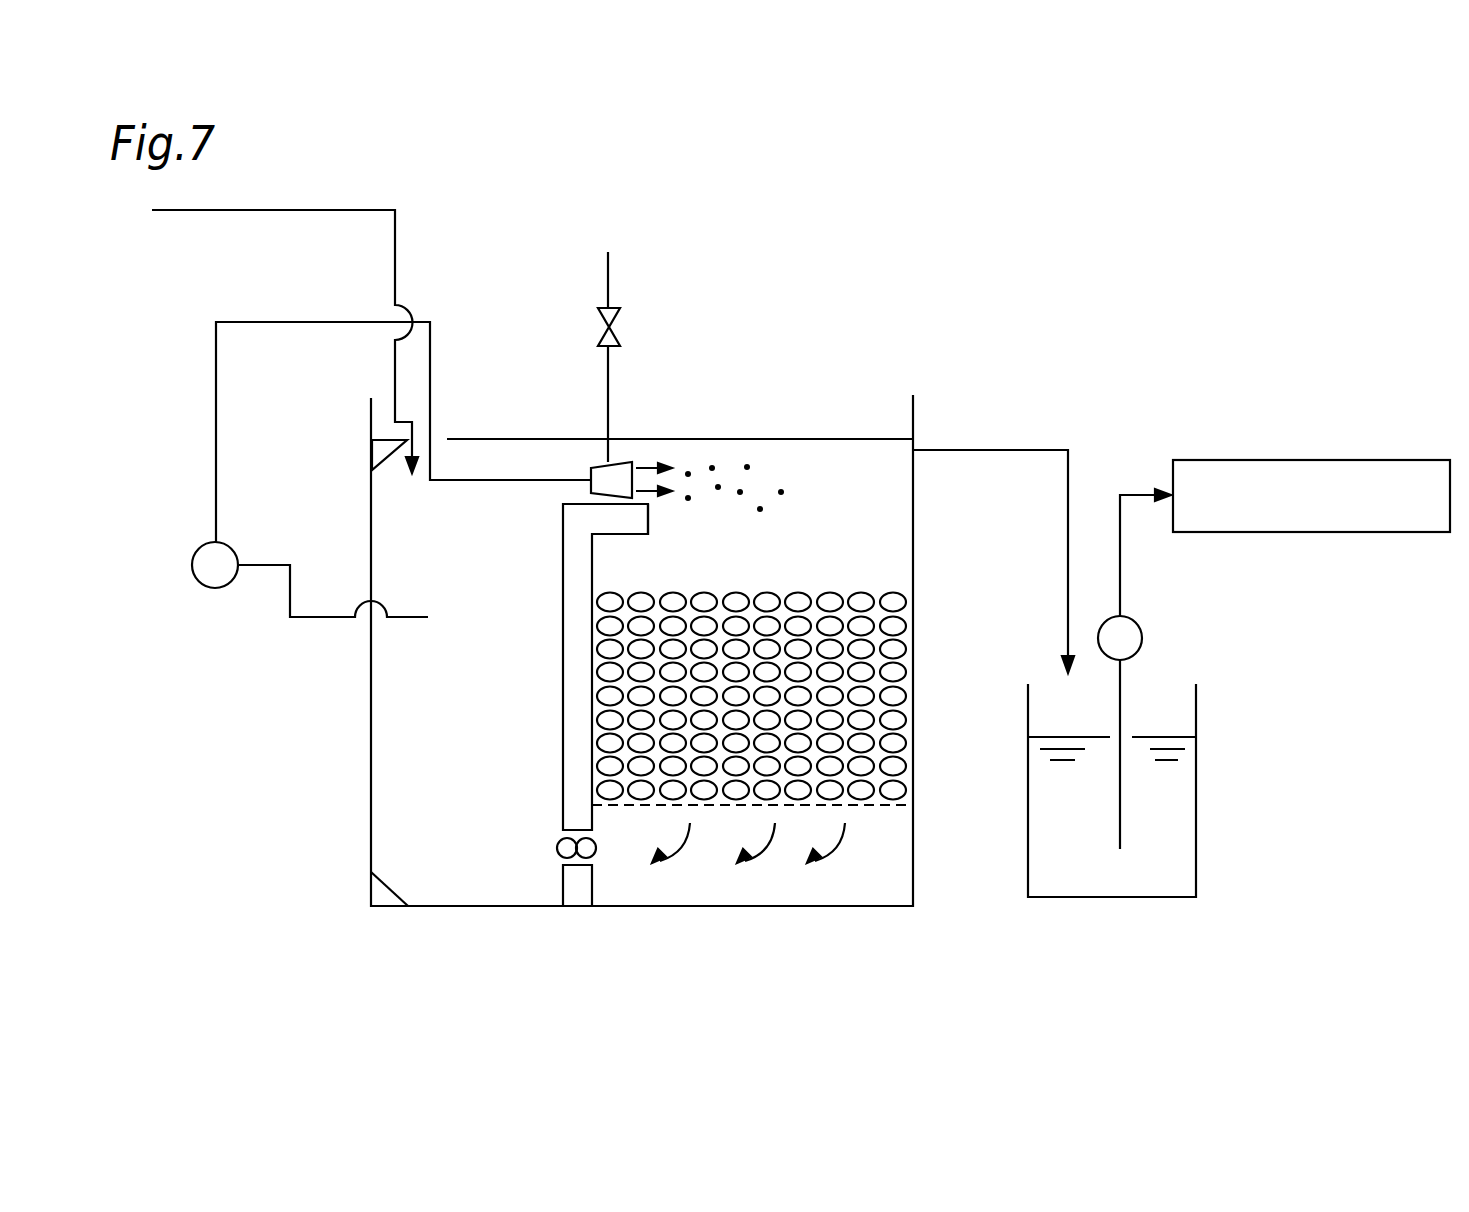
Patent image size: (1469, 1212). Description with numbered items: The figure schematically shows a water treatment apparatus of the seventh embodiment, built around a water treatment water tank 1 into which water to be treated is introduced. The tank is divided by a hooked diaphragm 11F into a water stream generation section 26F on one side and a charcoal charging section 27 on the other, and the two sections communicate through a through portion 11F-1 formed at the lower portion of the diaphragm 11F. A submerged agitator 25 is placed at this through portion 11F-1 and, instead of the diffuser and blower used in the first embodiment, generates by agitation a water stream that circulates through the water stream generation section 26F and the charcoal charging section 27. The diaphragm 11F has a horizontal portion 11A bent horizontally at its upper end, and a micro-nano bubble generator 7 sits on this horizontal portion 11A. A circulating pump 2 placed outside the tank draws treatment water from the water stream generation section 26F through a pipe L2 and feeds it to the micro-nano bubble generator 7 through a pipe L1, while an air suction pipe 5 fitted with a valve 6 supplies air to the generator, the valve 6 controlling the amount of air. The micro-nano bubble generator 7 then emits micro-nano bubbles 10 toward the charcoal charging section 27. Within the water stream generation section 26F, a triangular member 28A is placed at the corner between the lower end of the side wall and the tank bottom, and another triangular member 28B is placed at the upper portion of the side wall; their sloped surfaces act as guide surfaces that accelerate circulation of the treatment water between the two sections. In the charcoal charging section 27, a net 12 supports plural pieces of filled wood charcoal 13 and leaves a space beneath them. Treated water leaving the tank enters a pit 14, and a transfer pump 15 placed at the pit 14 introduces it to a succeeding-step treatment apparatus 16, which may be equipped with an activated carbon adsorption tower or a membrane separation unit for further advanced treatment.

The water treatment water tank 1 is at (355, 777).
The circulating pump 2 is at (215, 592).
The air suction pipe 5 is at (610, 270).
The valve 6 is at (620, 337).
The micro-nano bubble generator 7 is at (617, 470).
The micro-nano bubbles 10 is at (747, 465).
The horizontal portion 11A is at (632, 532).
The diaphragm 11F is at (561, 534).
The through portion 11F-1 is at (562, 832).
The net 12 is at (887, 805).
The wood charcoal 13 is at (906, 600).
The pit 14 is at (1213, 768).
The transfer pump 15 is at (1143, 637).
The succeeding-step treatment apparatus 16 is at (1213, 458).
The submerged agitator 25 is at (606, 862).
The water stream generation section 26F is at (568, 951).
The charcoal charging section 27 is at (582, 951).
The triangular member 28A is at (370, 893).
The triangular member 28B is at (380, 445).
The pipe L1 is at (258, 321).
The pipe L2 is at (262, 568).